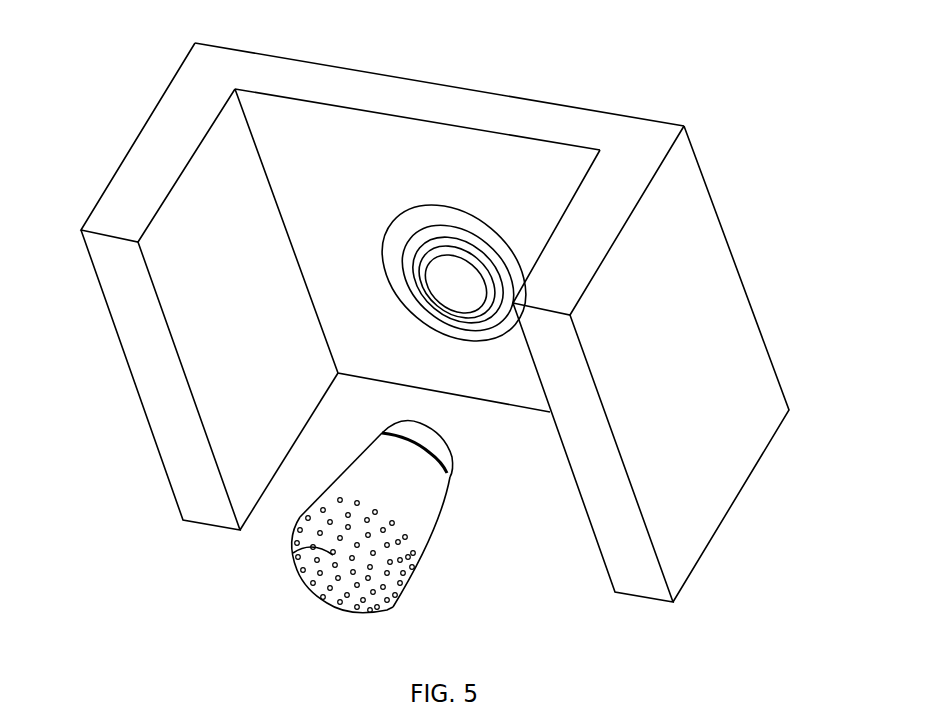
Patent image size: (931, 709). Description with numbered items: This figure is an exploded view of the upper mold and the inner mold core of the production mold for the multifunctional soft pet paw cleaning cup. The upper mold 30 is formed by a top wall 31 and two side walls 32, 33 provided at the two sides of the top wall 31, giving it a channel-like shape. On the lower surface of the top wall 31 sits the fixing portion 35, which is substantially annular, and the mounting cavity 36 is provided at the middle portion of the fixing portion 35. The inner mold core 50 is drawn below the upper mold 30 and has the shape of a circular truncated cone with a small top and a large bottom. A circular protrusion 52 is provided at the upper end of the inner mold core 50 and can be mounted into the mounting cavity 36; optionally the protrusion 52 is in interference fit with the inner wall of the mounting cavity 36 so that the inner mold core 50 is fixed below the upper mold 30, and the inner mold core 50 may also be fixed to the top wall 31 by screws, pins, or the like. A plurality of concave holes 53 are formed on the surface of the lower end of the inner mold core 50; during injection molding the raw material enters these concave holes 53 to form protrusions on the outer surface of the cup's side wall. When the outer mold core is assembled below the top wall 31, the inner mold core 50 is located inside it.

The upper mold 30 is at (437, 322).
The top wall 31 is at (439, 227).
The side wall 32 is at (155, 154).
The side wall 33 is at (672, 320).
The fixing portion 35 is at (447, 246).
The mounting cavity 36 is at (442, 298).
The inner mold core 50 is at (411, 531).
The circular protrusion 52 is at (443, 452).
The concave holes 53 is at (390, 607).